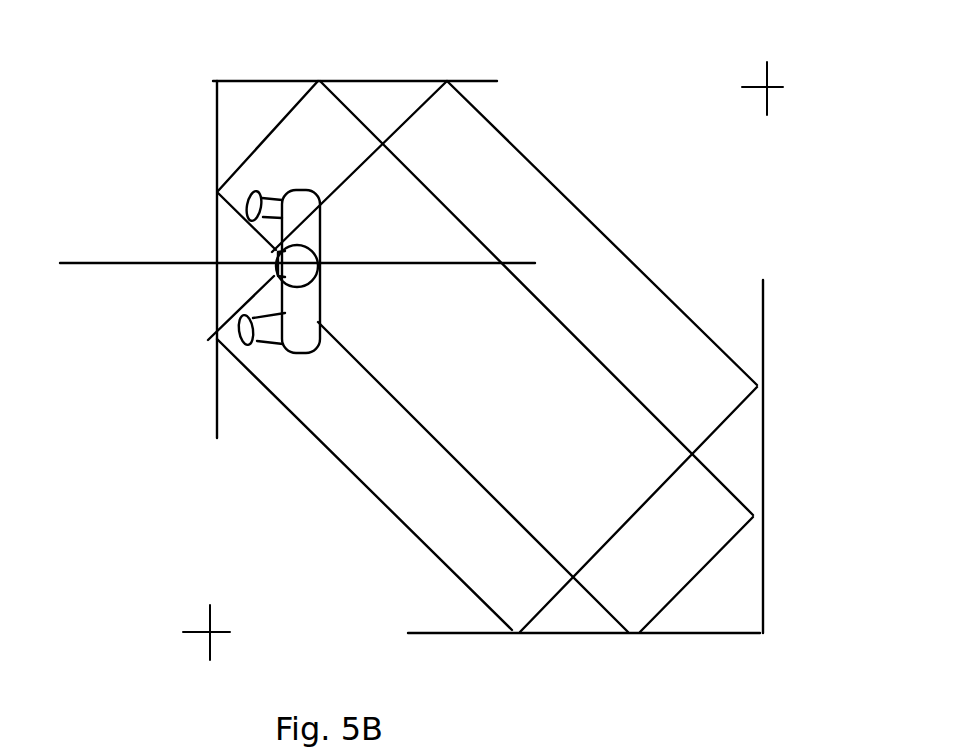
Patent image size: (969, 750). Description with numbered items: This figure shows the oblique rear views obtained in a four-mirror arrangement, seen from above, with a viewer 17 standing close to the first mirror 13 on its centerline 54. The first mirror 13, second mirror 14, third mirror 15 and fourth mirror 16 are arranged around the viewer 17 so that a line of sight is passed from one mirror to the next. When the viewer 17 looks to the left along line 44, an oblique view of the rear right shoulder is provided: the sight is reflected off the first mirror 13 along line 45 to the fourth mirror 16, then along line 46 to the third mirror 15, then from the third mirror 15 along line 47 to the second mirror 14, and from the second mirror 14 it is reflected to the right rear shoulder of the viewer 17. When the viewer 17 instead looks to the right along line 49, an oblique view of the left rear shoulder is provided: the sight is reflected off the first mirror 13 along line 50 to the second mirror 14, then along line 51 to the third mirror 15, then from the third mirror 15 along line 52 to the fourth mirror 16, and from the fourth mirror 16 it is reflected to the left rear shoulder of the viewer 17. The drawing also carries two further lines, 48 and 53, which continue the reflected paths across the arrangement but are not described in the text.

The first mirror 13 is at (212, 303).
The second mirror 14 is at (285, 80).
The third mirror 15 is at (763, 323).
The fourth mirror 16 is at (448, 633).
The viewer 17 is at (308, 292).
The line 44 is at (240, 310).
The line 45 is at (322, 448).
The line 46 is at (653, 495).
The line 47 is at (640, 262).
The edge line 48 is at (362, 170).
The line 49 is at (262, 238).
The line 50 is at (257, 147).
The line 51 is at (473, 230).
The line 52 is at (715, 555).
The edge line 53 is at (377, 378).
The centerline 54 is at (140, 262).